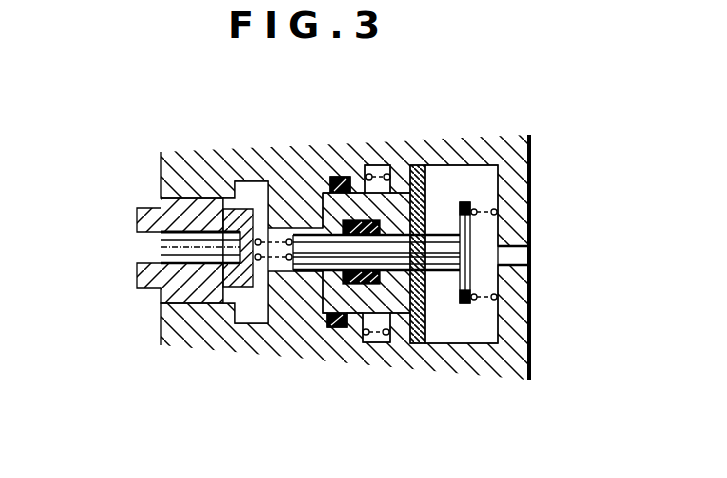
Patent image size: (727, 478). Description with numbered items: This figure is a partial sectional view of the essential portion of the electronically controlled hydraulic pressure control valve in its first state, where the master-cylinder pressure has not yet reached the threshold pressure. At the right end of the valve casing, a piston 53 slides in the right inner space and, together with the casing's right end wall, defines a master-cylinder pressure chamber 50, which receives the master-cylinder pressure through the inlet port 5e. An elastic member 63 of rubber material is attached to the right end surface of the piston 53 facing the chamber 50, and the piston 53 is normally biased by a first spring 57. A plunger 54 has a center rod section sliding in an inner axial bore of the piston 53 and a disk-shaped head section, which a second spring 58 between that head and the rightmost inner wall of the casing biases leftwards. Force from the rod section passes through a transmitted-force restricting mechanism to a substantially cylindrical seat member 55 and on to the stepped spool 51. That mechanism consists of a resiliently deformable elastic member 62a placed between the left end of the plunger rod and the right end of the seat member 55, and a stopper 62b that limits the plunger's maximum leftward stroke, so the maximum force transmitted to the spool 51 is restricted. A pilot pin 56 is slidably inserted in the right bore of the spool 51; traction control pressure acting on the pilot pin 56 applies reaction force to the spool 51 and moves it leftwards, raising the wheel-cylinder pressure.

The master-cylinder pressure chamber 50 is at (472, 338).
The stepped spool 51 is at (158, 290).
The piston 53 is at (383, 297).
The plunger 54 is at (433, 237).
The seat member 55 is at (233, 300).
The pilot pin 56 is at (163, 243).
The first spring 57 is at (386, 176).
The second spring 58 is at (475, 300).
The elastic member 62a is at (296, 233).
The stopper 62b is at (281, 268).
The elastic member 63 is at (420, 190).
The inlet port 5e is at (517, 257).